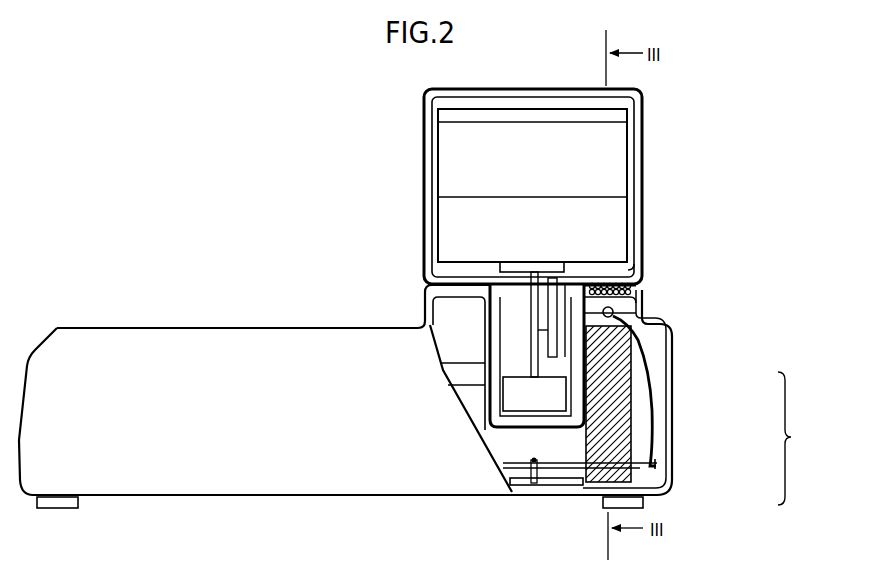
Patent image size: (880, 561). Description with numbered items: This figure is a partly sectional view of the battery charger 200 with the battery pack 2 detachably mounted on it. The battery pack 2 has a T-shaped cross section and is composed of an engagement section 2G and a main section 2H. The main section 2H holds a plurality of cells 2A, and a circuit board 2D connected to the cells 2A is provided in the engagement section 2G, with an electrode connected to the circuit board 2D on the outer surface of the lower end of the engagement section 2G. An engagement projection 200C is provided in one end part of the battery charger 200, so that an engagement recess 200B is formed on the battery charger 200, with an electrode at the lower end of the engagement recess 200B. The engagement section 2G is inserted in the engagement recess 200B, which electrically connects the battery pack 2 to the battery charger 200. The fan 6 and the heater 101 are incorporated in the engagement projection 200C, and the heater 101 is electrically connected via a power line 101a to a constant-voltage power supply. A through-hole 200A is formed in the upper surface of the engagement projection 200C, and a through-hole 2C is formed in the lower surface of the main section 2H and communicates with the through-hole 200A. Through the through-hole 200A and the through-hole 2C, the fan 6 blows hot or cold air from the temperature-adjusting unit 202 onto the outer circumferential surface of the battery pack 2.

The battery pack 2 is at (645, 141).
The cells 2A is at (588, 223).
The through-hole 2C is at (637, 277).
The circuit board 2D is at (530, 303).
The engagement section 2G is at (537, 395).
The main section 2H is at (421, 116).
The fan 6 is at (633, 440).
The heater 101 is at (667, 340).
The power line 101a is at (657, 425).
The battery charger 200 is at (278, 325).
The through-hole 200A is at (640, 296).
The engagement recess 200B is at (485, 366).
The engagement projection 200C is at (643, 310).
The temperature-adjusting unit 202 is at (807, 438).